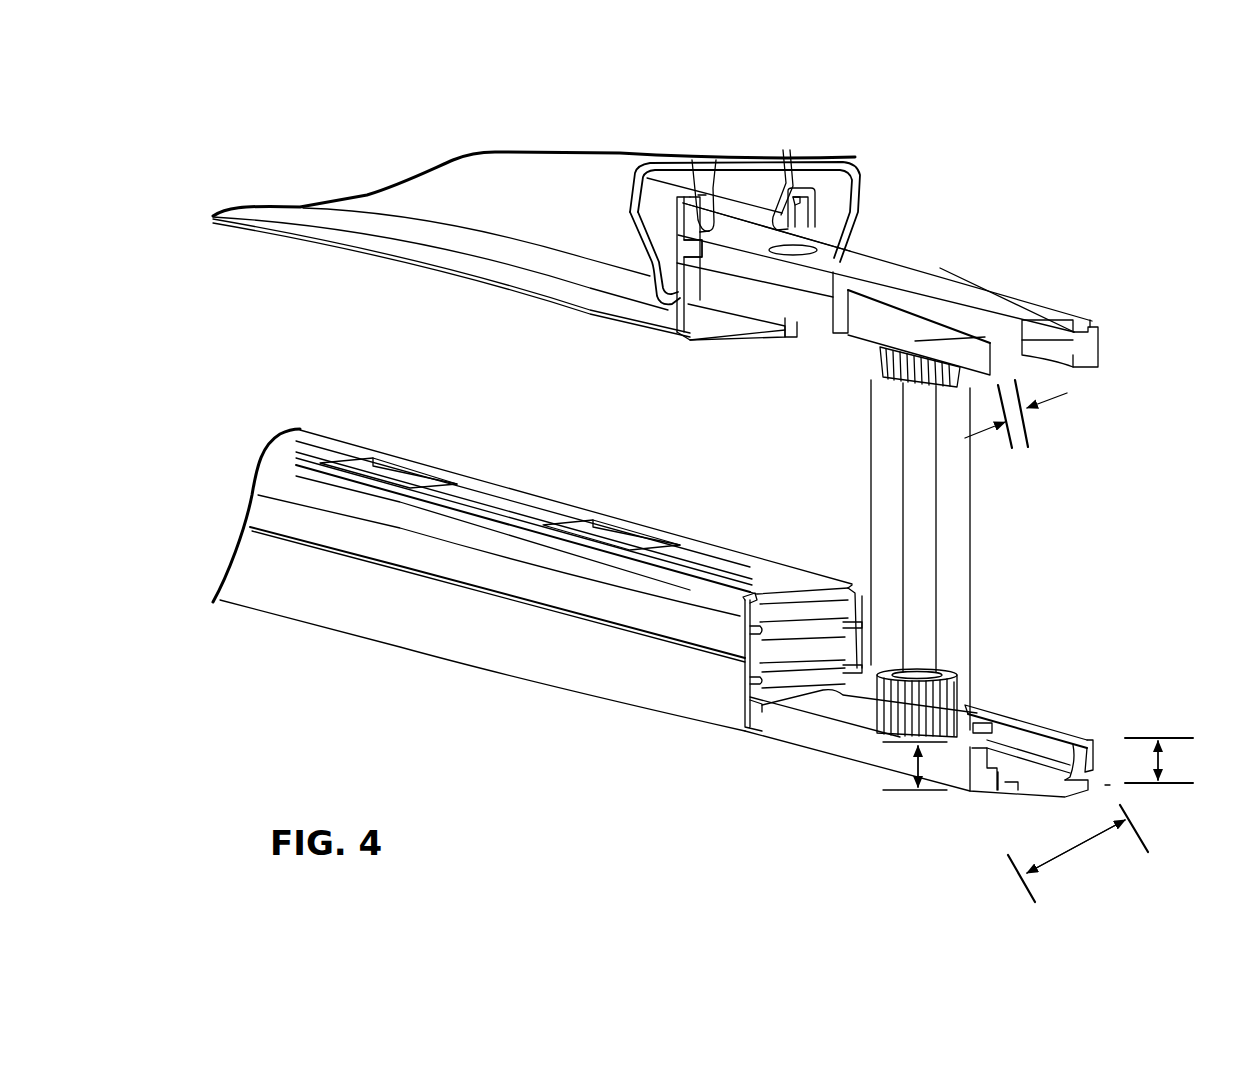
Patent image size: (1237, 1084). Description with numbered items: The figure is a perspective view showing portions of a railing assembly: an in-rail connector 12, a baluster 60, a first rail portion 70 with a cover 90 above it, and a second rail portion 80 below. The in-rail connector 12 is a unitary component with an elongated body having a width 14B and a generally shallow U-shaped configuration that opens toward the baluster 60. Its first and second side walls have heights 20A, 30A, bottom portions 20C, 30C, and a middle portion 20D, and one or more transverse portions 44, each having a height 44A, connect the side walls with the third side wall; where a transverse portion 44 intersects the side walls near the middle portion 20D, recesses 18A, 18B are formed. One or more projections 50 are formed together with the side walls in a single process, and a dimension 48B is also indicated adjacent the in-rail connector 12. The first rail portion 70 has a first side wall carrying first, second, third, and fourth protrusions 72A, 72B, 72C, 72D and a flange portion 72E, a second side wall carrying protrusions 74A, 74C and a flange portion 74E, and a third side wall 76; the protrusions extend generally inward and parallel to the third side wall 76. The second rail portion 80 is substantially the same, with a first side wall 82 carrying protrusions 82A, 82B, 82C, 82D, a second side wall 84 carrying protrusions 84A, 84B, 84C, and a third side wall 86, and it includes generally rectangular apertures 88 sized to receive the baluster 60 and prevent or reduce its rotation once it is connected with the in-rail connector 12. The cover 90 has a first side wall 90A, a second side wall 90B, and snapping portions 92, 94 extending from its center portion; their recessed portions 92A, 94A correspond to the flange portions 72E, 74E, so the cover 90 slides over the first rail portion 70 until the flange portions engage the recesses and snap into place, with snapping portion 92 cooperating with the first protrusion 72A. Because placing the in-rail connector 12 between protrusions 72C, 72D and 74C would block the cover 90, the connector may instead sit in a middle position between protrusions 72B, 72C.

The first in-rail connector 12 is at (1008, 290).
The width 14B is at (1093, 848).
The recess 18A is at (1078, 303).
The recess 18B is at (977, 313).
The height 20A is at (905, 768).
The bottom portion 20C is at (955, 793).
The middle portion 20D is at (978, 788).
The height 30A is at (1173, 758).
The bottom portion 30C is at (1110, 785).
The transverse portion 44 is at (1080, 360).
The height 44A is at (950, 333).
The gap width 48B is at (1022, 455).
The projection 50 is at (885, 378).
The baluster 60 is at (958, 487).
The first rail portion 70 is at (773, 347).
The first protrusion 72A is at (697, 330).
The second protrusion 72B is at (690, 300).
The third protrusion 72C is at (700, 245).
The fourth protrusion 72D is at (677, 202).
The flange portion 72E is at (714, 182).
The first protrusion 74A is at (793, 327).
The third protrusion 74C is at (840, 237).
The flange portion 74E is at (797, 182).
The third side wall 76 is at (726, 290).
The second rail portion 80 is at (715, 537).
The first side wall 82 is at (743, 720).
The first protrusion 82A is at (743, 598).
The second protrusion 82B is at (757, 637).
The third protrusion 82C is at (757, 683).
The fourth protrusion 82D is at (753, 732).
The second side wall 84 is at (870, 640).
The first protrusion 84A is at (840, 585).
The second protrusion 84B is at (870, 590).
The third protrusion 84C is at (865, 655).
The third side wall 86 is at (756, 592).
The aperture 88 is at (410, 473).
The cover 90 is at (510, 175).
The first side wall 90A is at (592, 207).
The second side wall 90B is at (858, 207).
The snapping portion 92 is at (708, 188).
The recessed portion 92A is at (703, 195).
The snapping portion 94 is at (770, 175).
The recessed portion 94A is at (807, 192).